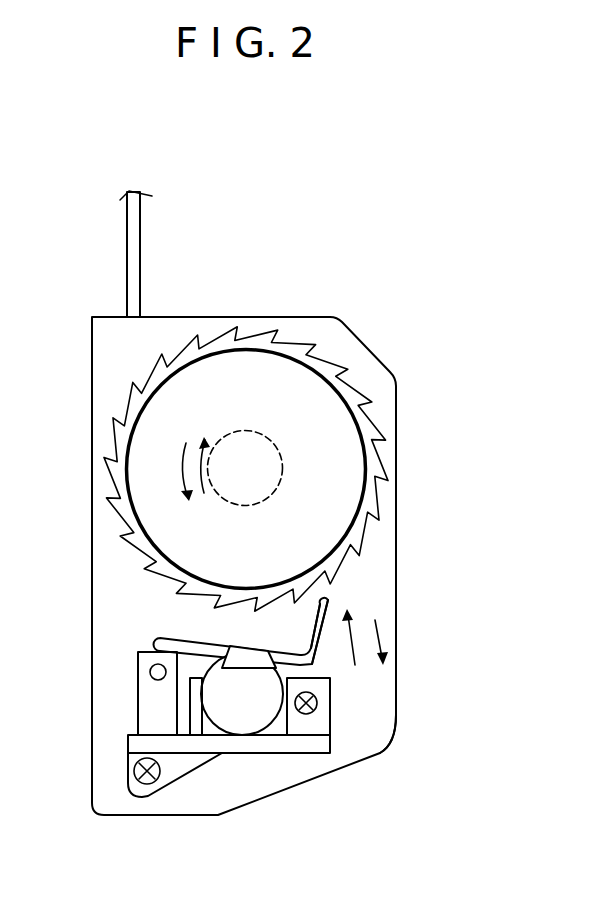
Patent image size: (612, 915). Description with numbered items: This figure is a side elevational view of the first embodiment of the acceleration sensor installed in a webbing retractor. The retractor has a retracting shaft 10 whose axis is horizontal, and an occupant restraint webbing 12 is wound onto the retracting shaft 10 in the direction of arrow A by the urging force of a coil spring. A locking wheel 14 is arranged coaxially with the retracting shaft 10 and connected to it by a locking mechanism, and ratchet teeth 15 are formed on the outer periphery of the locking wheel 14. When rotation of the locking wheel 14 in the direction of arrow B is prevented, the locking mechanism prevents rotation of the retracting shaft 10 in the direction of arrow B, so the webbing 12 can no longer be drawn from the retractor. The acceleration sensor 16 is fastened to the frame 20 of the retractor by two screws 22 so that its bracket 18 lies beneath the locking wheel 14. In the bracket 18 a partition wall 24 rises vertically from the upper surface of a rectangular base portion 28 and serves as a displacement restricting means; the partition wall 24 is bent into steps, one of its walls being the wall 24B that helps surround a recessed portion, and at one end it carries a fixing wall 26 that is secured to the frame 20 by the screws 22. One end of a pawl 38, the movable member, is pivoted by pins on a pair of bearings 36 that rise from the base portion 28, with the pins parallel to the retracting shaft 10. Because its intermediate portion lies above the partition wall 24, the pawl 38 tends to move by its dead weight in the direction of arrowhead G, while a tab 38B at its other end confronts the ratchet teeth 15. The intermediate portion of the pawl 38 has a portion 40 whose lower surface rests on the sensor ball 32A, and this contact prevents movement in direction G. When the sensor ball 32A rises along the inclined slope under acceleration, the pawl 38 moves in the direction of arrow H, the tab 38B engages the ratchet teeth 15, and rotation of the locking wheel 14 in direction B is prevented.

The retracting shaft 10 is at (276, 447).
The occupant restraint webbing 12 is at (141, 259).
The locking wheel 14 is at (404, 478).
The ratchet teeth 15 is at (380, 428).
The acceleration sensor 16 is at (241, 713).
The bracket 18 is at (386, 752).
The frame 20 is at (92, 392).
The screws 22 is at (318, 703).
The partition wall 24 is at (183, 714).
The wall 24B is at (285, 755).
The fixing wall 26 is at (330, 745).
The base portion 28 is at (300, 740).
The sensor ball 32A is at (233, 737).
The bearings 36 is at (138, 703).
The pawl 38 is at (175, 632).
The tab 38B is at (326, 598).
The portion 40 is at (253, 647).
The arrow A is at (183, 473).
The arrow B is at (203, 447).
The arrow G is at (374, 632).
The arrow H is at (354, 645).